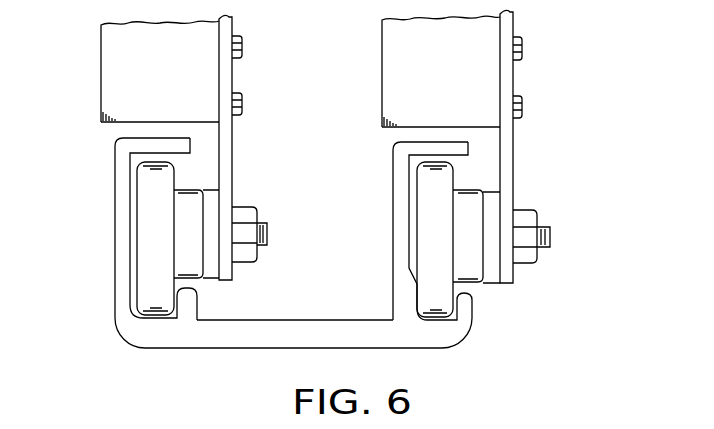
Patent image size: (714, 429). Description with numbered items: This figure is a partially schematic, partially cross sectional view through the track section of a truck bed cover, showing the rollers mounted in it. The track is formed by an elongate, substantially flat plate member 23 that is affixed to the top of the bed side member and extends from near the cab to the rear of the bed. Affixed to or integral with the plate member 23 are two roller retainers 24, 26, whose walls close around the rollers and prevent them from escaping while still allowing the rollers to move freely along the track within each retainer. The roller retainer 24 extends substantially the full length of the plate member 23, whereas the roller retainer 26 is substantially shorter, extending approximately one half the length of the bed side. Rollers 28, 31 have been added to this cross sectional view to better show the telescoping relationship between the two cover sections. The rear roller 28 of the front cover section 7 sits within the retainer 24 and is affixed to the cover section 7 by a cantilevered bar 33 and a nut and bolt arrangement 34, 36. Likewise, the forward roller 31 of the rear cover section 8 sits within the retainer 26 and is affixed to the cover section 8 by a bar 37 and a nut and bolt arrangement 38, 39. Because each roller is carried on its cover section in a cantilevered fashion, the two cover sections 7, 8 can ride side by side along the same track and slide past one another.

The front cover section 7 is at (120, 75).
The rear cover section 8 is at (395, 65).
The plate member 23 is at (327, 330).
The roller retainer 24 is at (120, 237).
The roller retainer 26 is at (397, 211).
The rear roller 28 is at (155, 265).
The forward roller 31 is at (428, 253).
The cantilevered bar 33 is at (228, 157).
The bolt 34 is at (266, 226).
The nut 36 is at (243, 213).
The bar 37 is at (507, 163).
The bolt 38 is at (548, 227).
The nut 39 is at (523, 211).